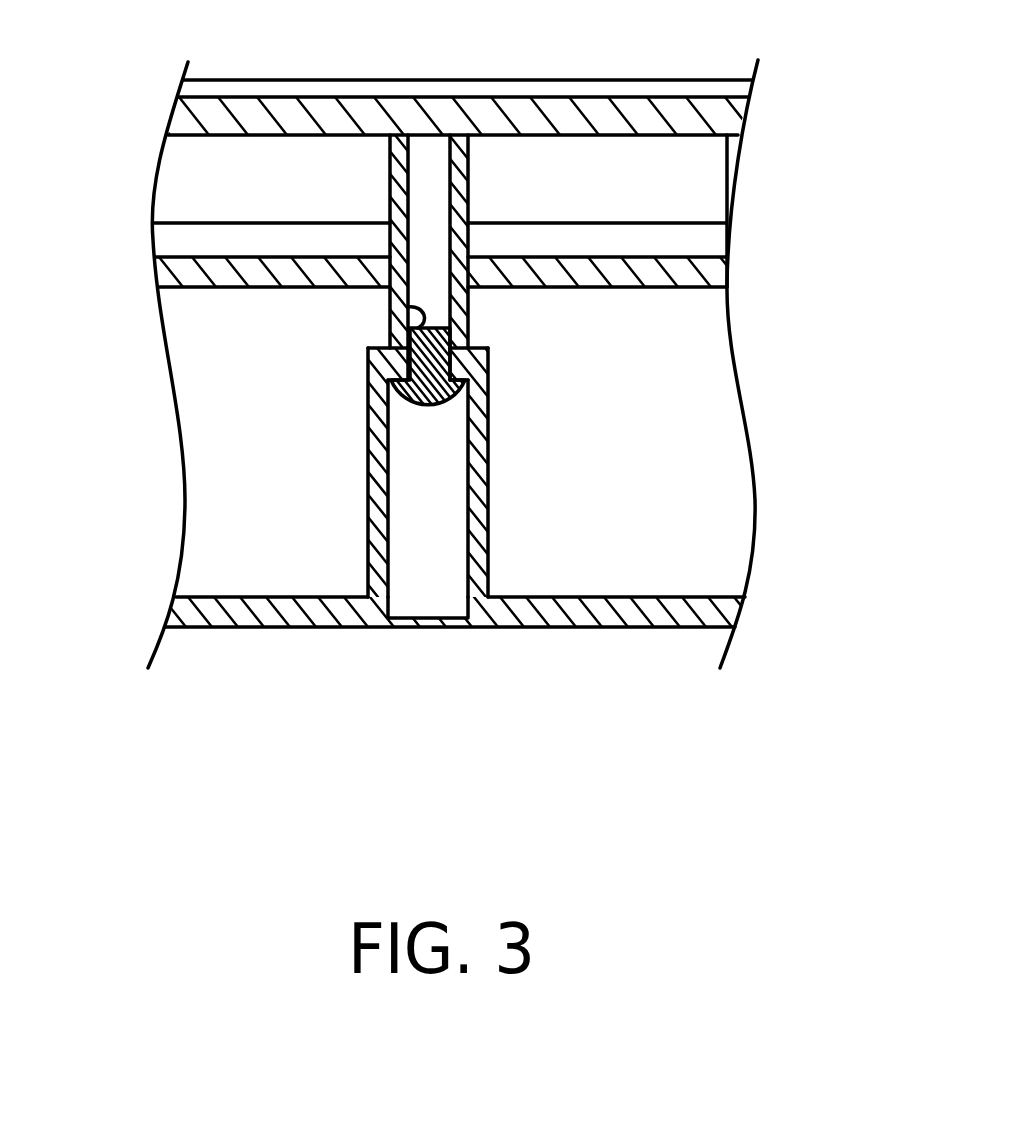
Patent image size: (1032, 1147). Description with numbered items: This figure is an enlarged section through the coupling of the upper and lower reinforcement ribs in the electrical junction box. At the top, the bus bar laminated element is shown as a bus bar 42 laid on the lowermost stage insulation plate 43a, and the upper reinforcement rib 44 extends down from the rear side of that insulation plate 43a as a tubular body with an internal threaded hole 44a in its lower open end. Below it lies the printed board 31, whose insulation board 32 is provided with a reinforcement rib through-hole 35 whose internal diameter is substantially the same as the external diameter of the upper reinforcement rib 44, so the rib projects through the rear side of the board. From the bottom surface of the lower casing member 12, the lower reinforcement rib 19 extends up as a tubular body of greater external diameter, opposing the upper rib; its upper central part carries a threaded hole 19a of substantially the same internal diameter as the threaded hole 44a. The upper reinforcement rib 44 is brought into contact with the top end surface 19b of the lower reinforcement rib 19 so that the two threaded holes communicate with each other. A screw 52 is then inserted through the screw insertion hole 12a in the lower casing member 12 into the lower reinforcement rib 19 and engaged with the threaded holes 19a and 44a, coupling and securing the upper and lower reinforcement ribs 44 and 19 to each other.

The lower casing member 12 is at (673, 617).
The screw insertion hole 12a is at (417, 613).
The lower reinforcement rib 19 is at (488, 497).
The threaded hole 19a is at (425, 407).
The top end surface 19b is at (470, 347).
The printed board 31 is at (702, 288).
The insulation board 32 is at (723, 268).
The reinforcement rib through-hole 35 is at (405, 277).
The bus bar 42 is at (740, 85).
The lowermost stage insulation plate 43a is at (740, 112).
The upper reinforcement rib 44 is at (467, 243).
The internal threaded hole 44a is at (408, 308).
The screw 52 is at (443, 407).